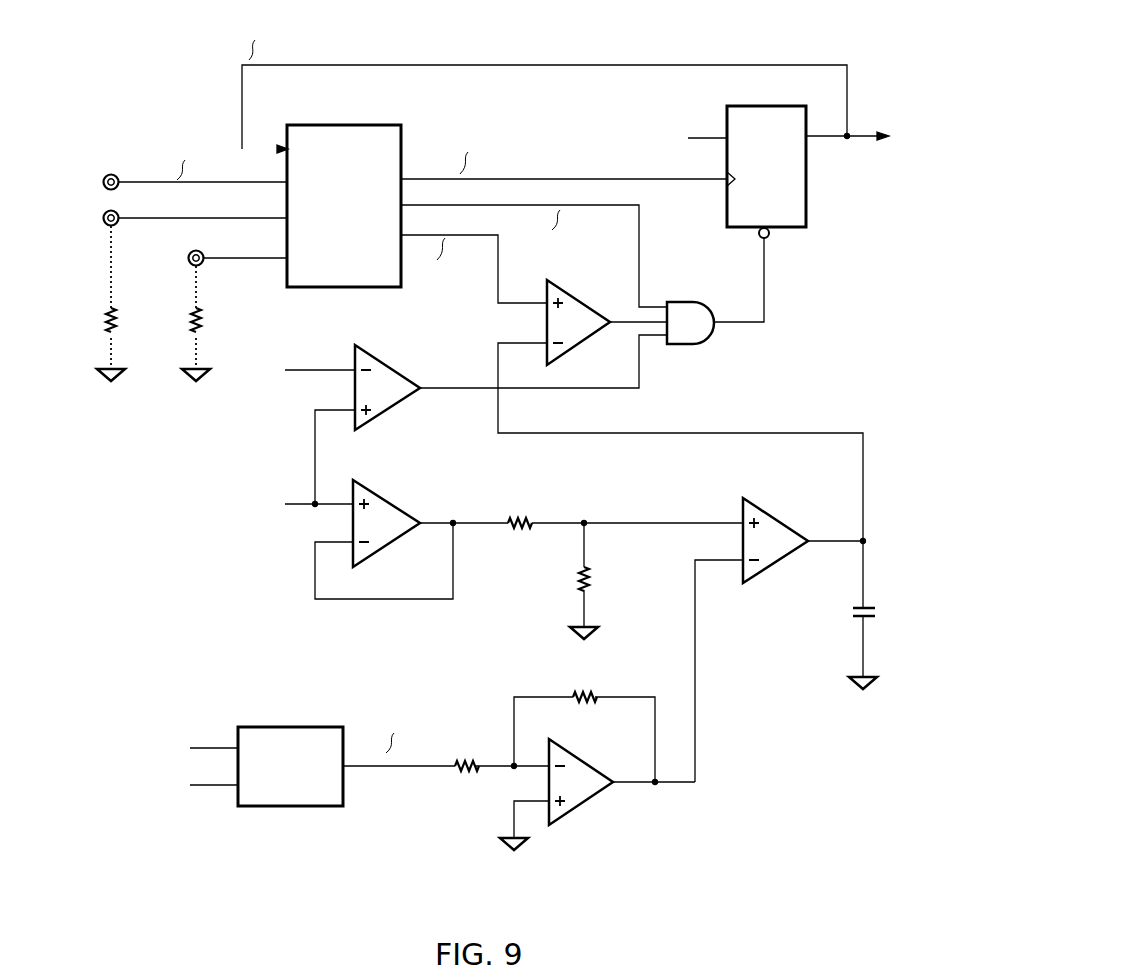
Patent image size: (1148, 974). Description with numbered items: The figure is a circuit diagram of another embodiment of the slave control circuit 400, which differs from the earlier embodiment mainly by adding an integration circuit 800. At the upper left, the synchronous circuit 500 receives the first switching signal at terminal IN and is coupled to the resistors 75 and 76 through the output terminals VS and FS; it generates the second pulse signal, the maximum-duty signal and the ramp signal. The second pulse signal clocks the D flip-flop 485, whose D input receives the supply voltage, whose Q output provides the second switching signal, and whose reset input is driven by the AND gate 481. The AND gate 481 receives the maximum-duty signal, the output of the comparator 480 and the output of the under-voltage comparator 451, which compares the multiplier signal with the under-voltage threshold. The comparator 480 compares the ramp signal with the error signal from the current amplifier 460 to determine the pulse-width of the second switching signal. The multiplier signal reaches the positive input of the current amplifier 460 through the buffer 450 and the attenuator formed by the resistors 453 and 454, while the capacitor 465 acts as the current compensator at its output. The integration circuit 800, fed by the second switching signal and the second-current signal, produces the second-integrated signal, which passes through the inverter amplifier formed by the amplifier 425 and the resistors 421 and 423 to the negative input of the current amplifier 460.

The slave control circuit 400 is at (926, 28).
The synchronous circuit 500 is at (344, 190).
The D flip-flop 485 is at (766, 157).
The comparator 480 is at (584, 318).
The AND gate 481 is at (690, 308).
The under-voltage comparator 451 is at (396, 385).
The buffer 450 is at (394, 521).
The resistor 453 is at (526, 508).
The resistor 454 is at (612, 581).
The current amplifier 460 is at (780, 537).
The capacitor 465 is at (837, 613).
The resistor 423 is at (588, 681).
The resistor 421 is at (468, 751).
The amplifier 425 is at (589, 781).
The integration circuit 800 is at (290, 754).
The resistor 75 is at (94, 321).
The resistor 76 is at (179, 321).